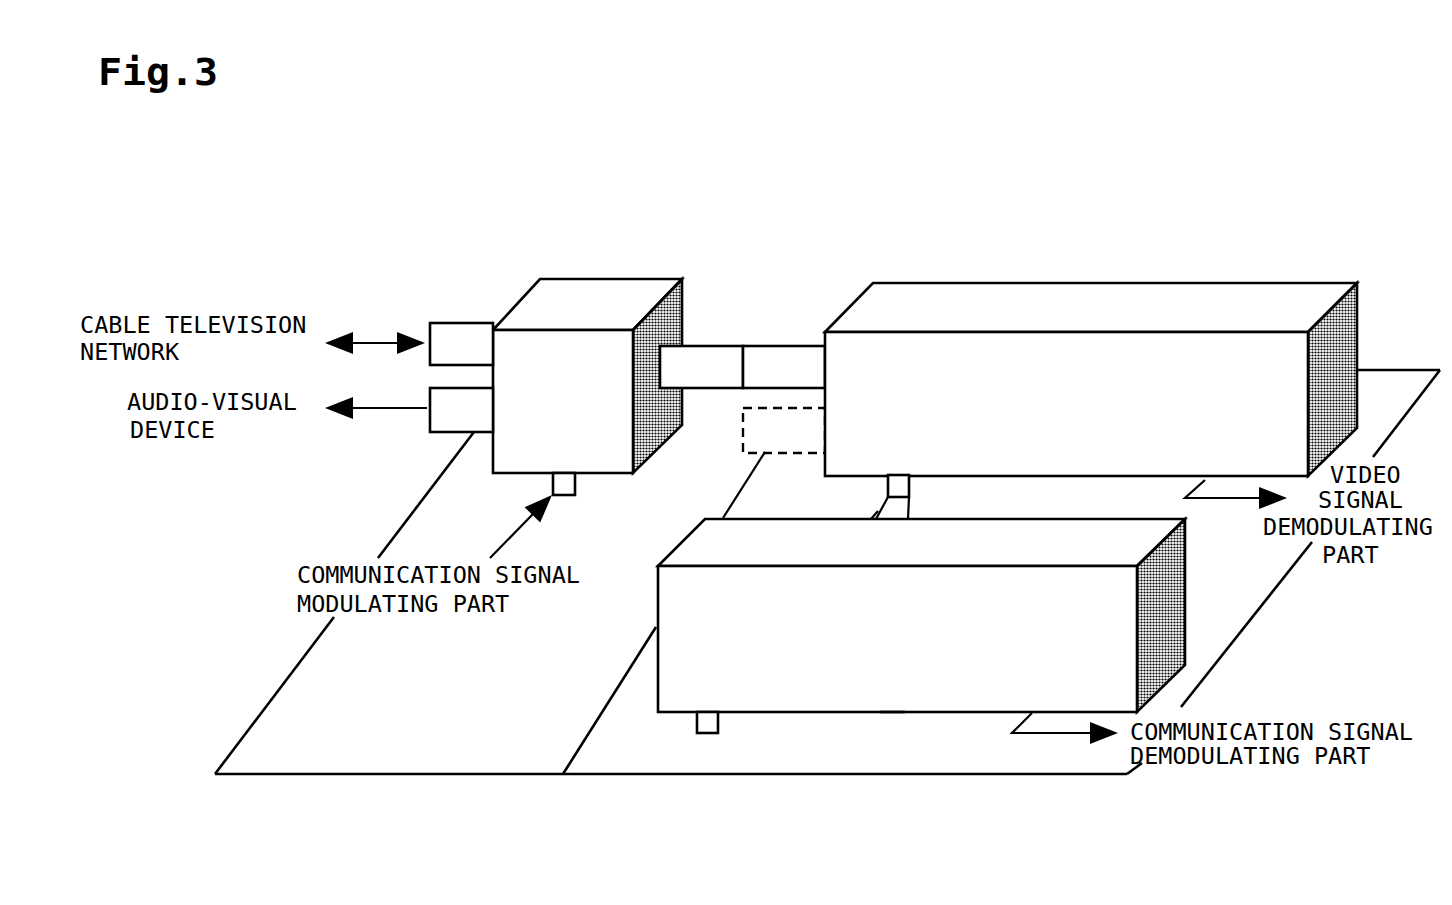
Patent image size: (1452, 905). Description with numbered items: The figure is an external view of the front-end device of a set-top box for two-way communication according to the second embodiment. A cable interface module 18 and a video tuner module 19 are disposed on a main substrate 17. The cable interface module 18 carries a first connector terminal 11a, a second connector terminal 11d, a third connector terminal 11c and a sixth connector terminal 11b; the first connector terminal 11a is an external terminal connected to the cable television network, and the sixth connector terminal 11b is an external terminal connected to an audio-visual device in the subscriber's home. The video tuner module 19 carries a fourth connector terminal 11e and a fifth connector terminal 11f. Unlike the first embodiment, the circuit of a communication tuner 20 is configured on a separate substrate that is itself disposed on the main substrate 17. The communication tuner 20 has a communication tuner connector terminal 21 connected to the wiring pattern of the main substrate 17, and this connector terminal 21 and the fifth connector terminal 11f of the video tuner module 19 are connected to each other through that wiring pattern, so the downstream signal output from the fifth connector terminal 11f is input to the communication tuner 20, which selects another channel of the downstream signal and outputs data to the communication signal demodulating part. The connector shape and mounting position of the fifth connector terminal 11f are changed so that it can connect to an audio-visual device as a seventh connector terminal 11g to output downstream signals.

The first connector terminal 11a is at (467, 333).
The sixth connector terminal 11b is at (450, 427).
The third connector terminal 11c is at (702, 367).
The second connector terminal 11d is at (553, 495).
The fourth connector terminal 11e is at (787, 367).
The fifth connector terminal 11f is at (892, 713).
The seventh connector terminal 11g is at (563, 774).
The main substrate 17 is at (1248, 585).
The cable interface module 18 is at (598, 303).
The video tuner module 19 is at (1088, 282).
The communication tuner 20 is at (968, 713).
The communication tuner connector terminal 21 is at (698, 733).